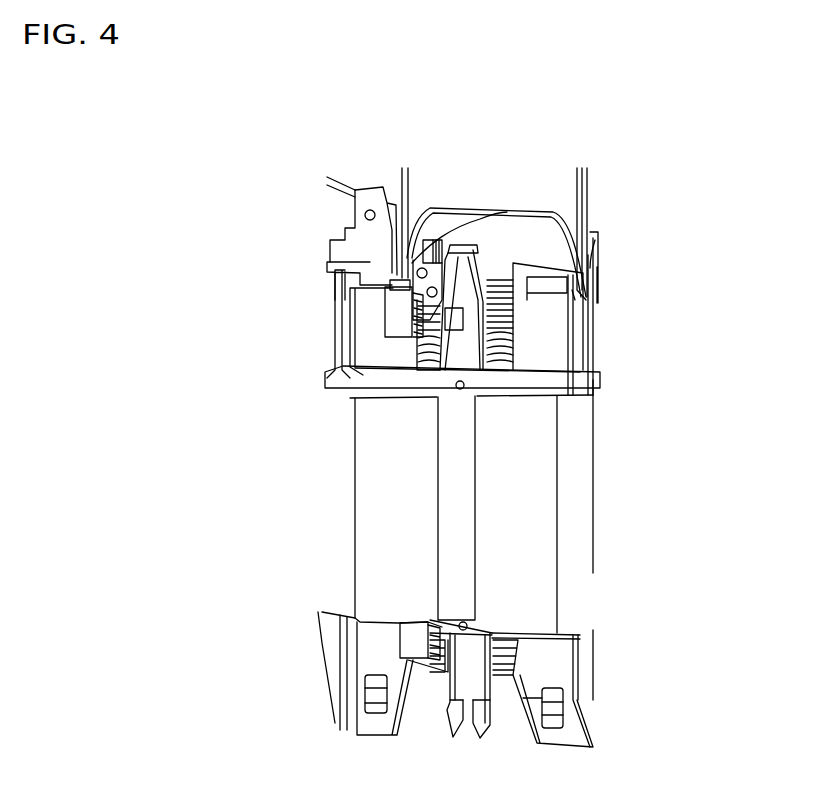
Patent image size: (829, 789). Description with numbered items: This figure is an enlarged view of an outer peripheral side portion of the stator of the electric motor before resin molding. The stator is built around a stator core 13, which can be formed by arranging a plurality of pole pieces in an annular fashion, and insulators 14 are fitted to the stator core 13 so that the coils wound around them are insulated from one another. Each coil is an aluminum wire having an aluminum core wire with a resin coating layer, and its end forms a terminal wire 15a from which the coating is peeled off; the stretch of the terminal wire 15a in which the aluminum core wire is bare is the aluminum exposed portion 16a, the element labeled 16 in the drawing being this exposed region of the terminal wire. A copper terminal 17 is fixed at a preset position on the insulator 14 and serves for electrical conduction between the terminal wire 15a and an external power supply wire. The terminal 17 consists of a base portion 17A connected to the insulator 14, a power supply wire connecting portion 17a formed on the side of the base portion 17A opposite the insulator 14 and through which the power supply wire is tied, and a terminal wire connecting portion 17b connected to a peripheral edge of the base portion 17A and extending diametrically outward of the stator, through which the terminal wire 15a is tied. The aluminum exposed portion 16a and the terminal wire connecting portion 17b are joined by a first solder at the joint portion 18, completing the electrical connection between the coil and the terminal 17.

The stator core 13 is at (502, 458).
The insulator 14 is at (523, 297).
The terminal wire 15a is at (408, 315).
The holder frame 16 is at (433, 360).
The aluminum exposed portion 16a is at (480, 260).
The terminal 17 is at (363, 247).
The base portion 17A is at (363, 273).
The power supply wire connecting portion 17a is at (370, 198).
The terminal wire connecting portion 17b is at (427, 243).
The joint portion 18 is at (590, 212).